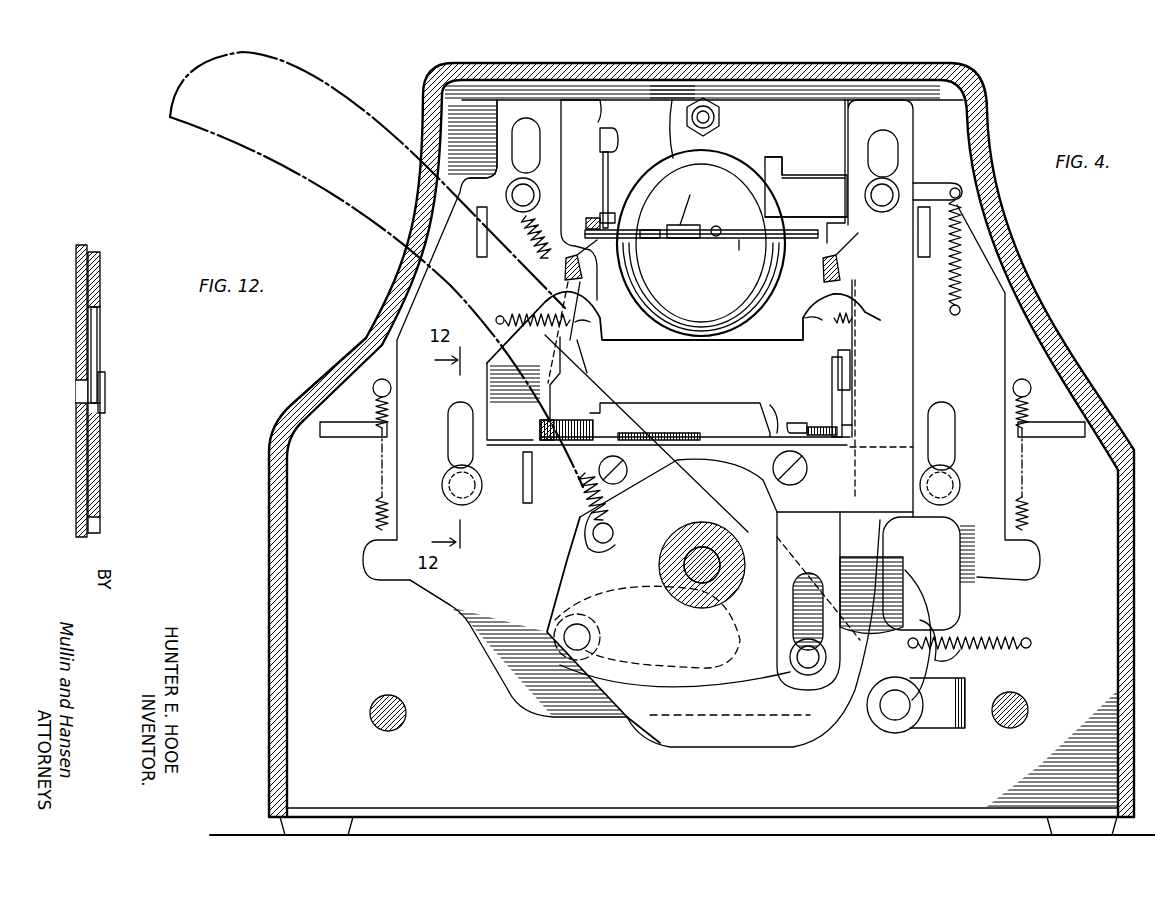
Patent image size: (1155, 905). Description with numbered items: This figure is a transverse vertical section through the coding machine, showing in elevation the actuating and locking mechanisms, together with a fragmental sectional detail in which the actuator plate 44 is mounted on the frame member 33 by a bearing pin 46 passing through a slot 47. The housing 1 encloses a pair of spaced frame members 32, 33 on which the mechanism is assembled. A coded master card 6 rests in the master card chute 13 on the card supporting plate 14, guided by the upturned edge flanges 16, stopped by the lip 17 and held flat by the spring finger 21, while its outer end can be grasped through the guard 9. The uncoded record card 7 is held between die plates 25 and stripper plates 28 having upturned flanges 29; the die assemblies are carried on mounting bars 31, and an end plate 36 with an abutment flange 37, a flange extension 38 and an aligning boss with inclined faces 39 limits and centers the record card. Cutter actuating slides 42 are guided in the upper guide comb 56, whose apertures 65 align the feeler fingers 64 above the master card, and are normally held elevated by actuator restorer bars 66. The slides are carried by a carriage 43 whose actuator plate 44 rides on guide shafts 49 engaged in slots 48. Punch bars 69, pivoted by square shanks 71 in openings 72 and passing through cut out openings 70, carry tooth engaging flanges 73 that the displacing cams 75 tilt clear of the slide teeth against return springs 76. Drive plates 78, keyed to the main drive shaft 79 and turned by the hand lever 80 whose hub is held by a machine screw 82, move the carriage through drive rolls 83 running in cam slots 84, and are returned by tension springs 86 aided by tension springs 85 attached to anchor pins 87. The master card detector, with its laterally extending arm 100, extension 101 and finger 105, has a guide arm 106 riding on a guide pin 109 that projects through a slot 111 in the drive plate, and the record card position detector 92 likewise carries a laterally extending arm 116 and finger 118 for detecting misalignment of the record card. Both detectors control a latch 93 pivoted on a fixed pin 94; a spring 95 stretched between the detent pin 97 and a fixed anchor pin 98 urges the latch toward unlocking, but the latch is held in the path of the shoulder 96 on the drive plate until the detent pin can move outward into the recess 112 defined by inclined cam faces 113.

In FIG. 4, the housing 1 is at (259, 597).
In FIG. 4, the coded master card 6 is at (652, 228).
In FIG. 4, the uncoded record card 7 is at (770, 405).
In FIG. 4, the guard 9 is at (728, 165).
In FIG. 4, the master card chute 13 is at (681, 207).
In FIG. 4, the card supporting plate 14 is at (740, 242).
In FIG. 4, the edge flanges 16 is at (586, 230).
In FIG. 4, the lip 17 is at (690, 225).
In FIG. 4, the spring finger 21 is at (720, 228).
In FIG. 4, the die plates 25 is at (615, 455).
In FIG. 4, the stripper plate 28 is at (820, 424).
In FIG. 4, the upturned flange 29 is at (795, 422).
In FIG. 4, the mounting bars 31 is at (340, 438).
In FIG. 4, the frame member 32 is at (597, 101).
In FIG. 4, the frame member 33 is at (704, 413).
In FIG. 12, the frame member 33 is at (76, 499).
In FIG. 4, the end plate 36 is at (676, 396).
In FIG. 4, the abutment flange 37 is at (722, 415).
In FIG. 4, the flange extension 38 is at (600, 395).
In FIG. 4, the inclined faces 39 is at (560, 420).
In FIG. 4, the cutter actuating slides 42 is at (607, 127).
In FIG. 4, the carriage 43 is at (420, 603).
In FIG. 4, the actuator plate 44 is at (701, 408).
In FIG. 12, the actuator plate 44 is at (100, 460).
In FIG. 4, the bearing pins 46 is at (450, 495).
In FIG. 12, the bearing pins 46 is at (105, 393).
In FIG. 4, the slots 47 is at (449, 440).
In FIG. 12, the slots 47 is at (100, 320).
In FIG. 4, the slots 48 is at (500, 172).
In FIG. 4, the guide shafts 49 is at (528, 190).
In FIG. 4, the upper guide comb 56 is at (593, 218).
In FIG. 4, the feeler fingers 64 is at (618, 150).
In FIG. 4, the apertures 65 is at (608, 210).
In FIG. 4, the actuator restorer bars 66 is at (477, 240).
In FIG. 4, the punch bars 69 is at (586, 322).
In FIG. 4, the cut out openings 70 is at (600, 302).
In FIG. 4, the square shanks 71 is at (583, 262).
In FIG. 4, the openings 72 is at (564, 270).
In FIG. 4, the tooth engaging flanges 73 is at (578, 348).
In FIG. 4, the punch bar displacing cams 75 is at (548, 370).
In FIG. 4, the return springs 76 is at (507, 318).
In FIG. 4, the drive plates 78 is at (735, 750).
In FIG. 4, the main drive shaft 79 is at (730, 586).
In FIG. 4, the hand lever 80 is at (262, 158).
In FIG. 4, the machine screw 82 is at (698, 562).
In FIG. 4, the drive rolls 83 is at (596, 618).
In FIG. 4, the cam slots 84 is at (645, 665).
In FIG. 4, the tension springs 85 is at (580, 495).
In FIG. 4, the tension springs 86 is at (376, 514).
In FIG. 4, the anchor pins 87 is at (600, 542).
In FIG. 4, the record card position detector 92 is at (915, 370).
In FIG. 4, the latch 93 is at (963, 590).
In FIG. 4, the fixed pin 94 is at (892, 710).
In FIG. 4, the spring 95 is at (1010, 640).
In FIG. 4, the shoulder 96 is at (872, 640).
In FIG. 4, the detent pin 97 is at (927, 615).
In FIG. 4, the fixed anchor pin 98 is at (1032, 643).
In FIG. 4, the laterally extending arm 100 is at (815, 175).
In FIG. 4, the extension 101 is at (772, 158).
In FIG. 4, the finger 105 is at (800, 215).
In FIG. 4, the guide arm 106 is at (777, 635).
In FIG. 4, the guide pin 109 is at (808, 675).
In FIG. 4, the slot 111 is at (755, 682).
In FIG. 4, the recess 112 is at (932, 640).
In FIG. 4, the inclined cam faces 113 is at (965, 650).
In FIG. 4, the laterally extending arm 116 is at (832, 370).
In FIG. 4, the finger 118 is at (843, 425).